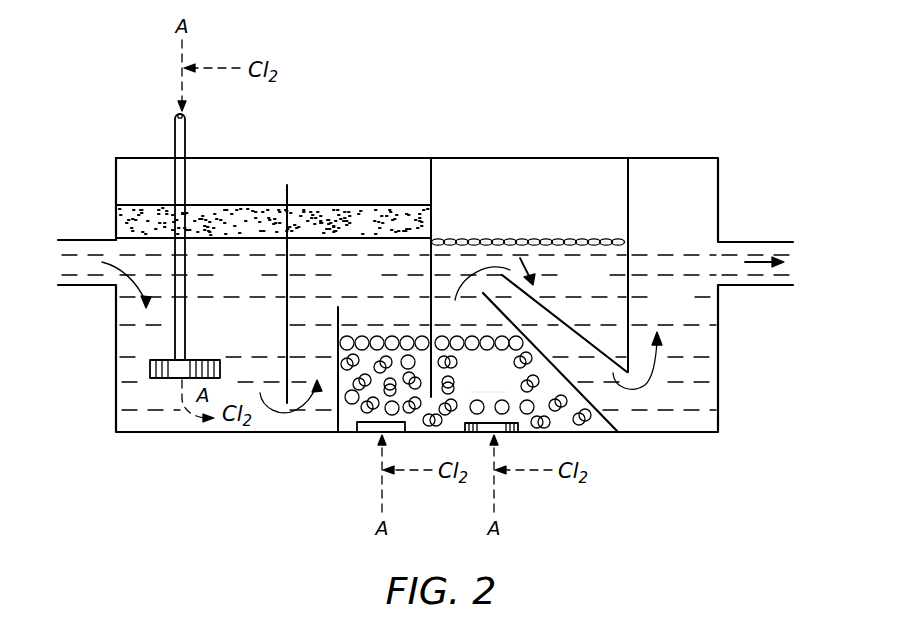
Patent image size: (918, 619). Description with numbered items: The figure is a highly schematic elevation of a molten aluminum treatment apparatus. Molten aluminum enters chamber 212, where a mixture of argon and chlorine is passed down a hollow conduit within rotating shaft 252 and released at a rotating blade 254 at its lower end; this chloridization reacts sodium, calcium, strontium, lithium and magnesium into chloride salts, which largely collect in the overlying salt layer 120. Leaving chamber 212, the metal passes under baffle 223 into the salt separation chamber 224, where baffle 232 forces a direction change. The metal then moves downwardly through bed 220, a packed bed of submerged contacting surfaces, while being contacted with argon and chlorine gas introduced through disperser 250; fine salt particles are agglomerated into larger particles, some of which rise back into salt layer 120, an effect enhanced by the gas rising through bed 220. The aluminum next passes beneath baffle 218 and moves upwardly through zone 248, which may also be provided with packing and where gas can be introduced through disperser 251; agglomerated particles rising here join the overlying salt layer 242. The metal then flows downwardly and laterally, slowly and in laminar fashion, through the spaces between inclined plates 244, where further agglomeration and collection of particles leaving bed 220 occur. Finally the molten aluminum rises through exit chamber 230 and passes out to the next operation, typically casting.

The salt layer 120 is at (220, 211).
The chamber 212 is at (256, 290).
The baffle 218 is at (433, 181).
The bed 220 is at (374, 363).
The baffle 223 is at (289, 191).
The salt separation chamber 224 is at (370, 290).
The exit chamber 230 is at (688, 310).
The baffle 232 is at (339, 403).
The salt layer 242 is at (503, 238).
The inclined plates 244 is at (560, 342).
The zone 248 is at (505, 392).
The disperser 250 is at (366, 427).
The disperser 251 is at (508, 432).
The rotating shaft 252 is at (187, 325).
The rotating blade 254 is at (152, 371).